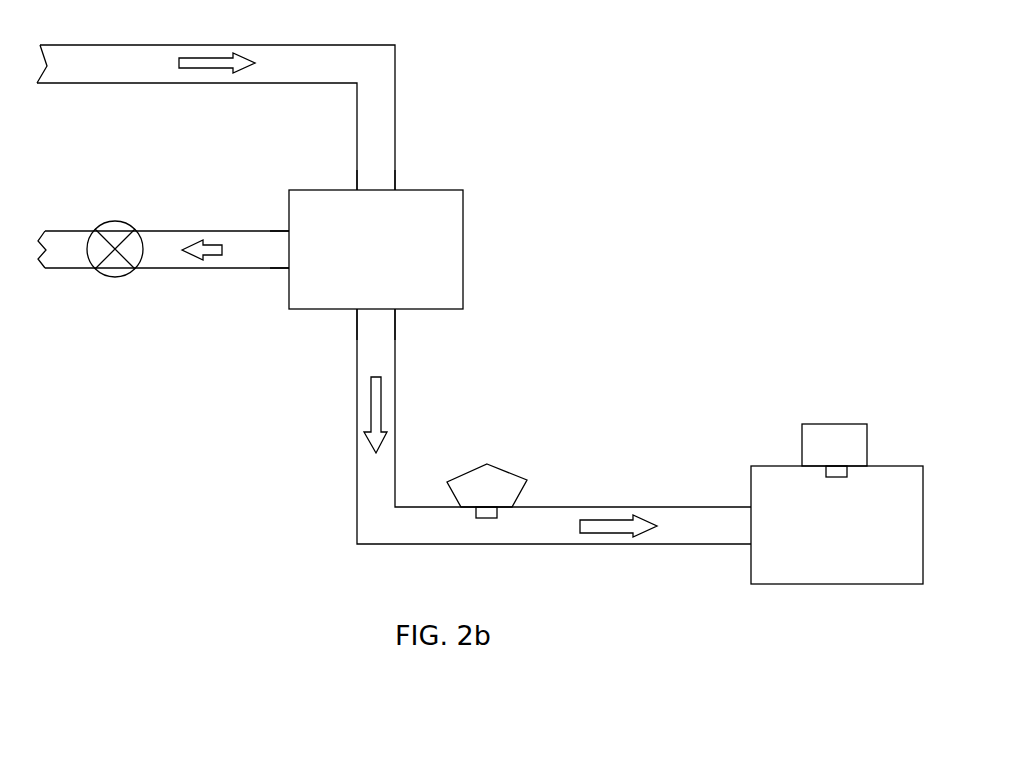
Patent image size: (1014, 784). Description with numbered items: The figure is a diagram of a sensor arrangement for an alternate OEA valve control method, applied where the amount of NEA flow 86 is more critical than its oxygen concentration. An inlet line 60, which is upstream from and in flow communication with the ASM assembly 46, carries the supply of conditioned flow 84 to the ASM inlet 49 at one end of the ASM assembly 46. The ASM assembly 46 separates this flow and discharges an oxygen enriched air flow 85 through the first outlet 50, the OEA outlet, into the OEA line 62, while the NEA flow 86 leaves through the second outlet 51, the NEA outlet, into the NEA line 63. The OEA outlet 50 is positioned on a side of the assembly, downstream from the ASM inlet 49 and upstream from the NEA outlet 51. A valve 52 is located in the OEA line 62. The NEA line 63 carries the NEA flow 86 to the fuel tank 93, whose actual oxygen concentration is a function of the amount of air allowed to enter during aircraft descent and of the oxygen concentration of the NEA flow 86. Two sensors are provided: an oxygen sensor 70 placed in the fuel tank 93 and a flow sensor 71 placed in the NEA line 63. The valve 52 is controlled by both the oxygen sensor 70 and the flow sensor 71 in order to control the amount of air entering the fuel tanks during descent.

The ASM assembly 46 is at (376, 249).
The ASM inlet 49 is at (373, 190).
The first outlet 50 is at (289, 250).
The second outlet 51 is at (378, 311).
The valve 52 is at (110, 230).
The inlet line 60 is at (395, 83).
The OEA line 62 is at (152, 268).
The NEA line 63 is at (357, 485).
The oxygen sensor 70 is at (844, 424).
The flow sensor 71 is at (505, 470).
The conditioned flow 84 is at (209, 58).
The oxygen enriched air flow 85 is at (211, 245).
The NEA flow 86 is at (371, 404).
The fuel tank 93 is at (837, 525).